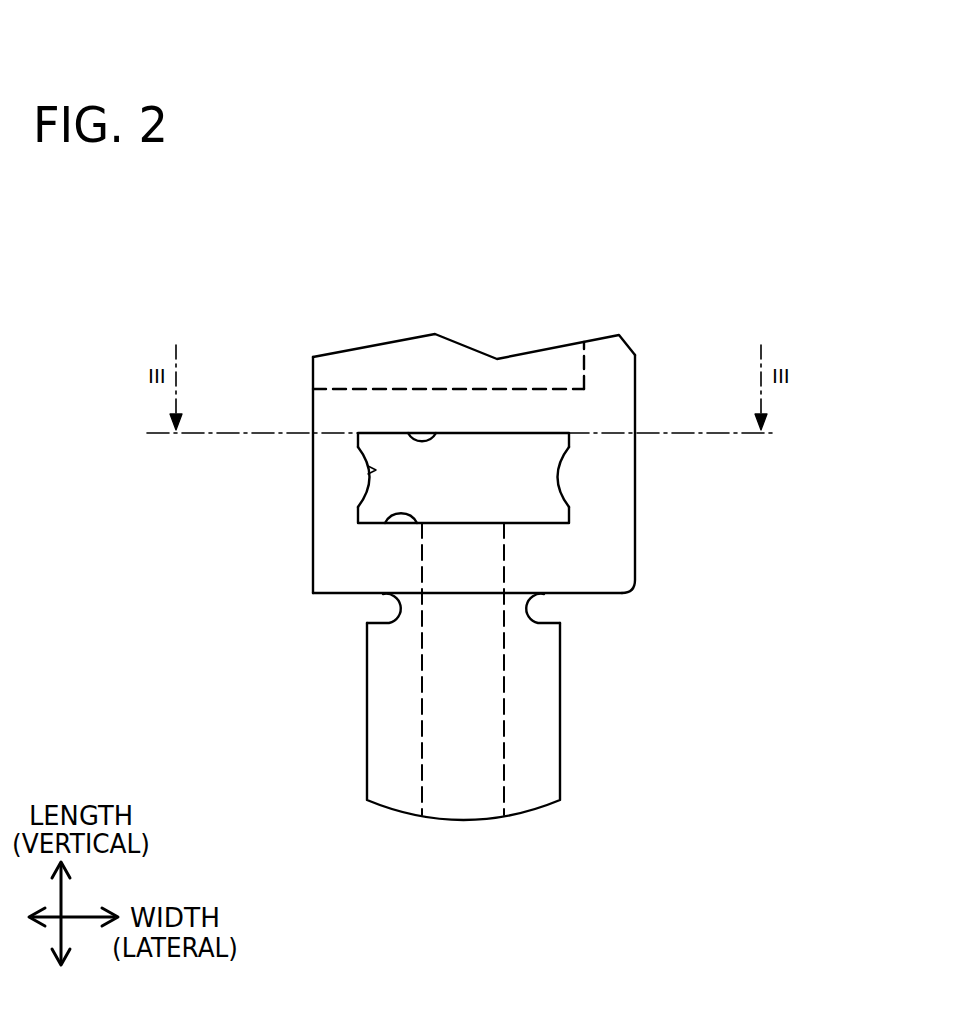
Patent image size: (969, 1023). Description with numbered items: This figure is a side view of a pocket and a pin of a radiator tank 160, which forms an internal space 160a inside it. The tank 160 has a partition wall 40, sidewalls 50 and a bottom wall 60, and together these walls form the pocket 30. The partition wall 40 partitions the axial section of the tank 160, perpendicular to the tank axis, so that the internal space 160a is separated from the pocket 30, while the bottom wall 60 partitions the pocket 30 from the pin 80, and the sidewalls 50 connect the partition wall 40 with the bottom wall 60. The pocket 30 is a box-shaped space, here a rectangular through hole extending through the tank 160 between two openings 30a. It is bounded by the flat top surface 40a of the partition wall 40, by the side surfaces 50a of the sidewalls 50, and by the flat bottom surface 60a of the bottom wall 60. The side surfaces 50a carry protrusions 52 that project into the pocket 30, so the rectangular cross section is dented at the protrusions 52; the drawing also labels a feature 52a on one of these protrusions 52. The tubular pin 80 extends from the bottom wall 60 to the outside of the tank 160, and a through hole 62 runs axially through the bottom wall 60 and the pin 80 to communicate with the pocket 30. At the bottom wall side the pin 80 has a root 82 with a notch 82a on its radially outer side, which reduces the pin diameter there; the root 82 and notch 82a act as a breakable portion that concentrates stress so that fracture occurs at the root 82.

The tank 160 is at (668, 256).
The internal space 160a is at (573, 367).
The partition wall 40 is at (500, 410).
The top surface 40a is at (420, 437).
The sidewalls 50 is at (313, 503).
The side surfaces 50a is at (358, 433).
The protrusions 52 is at (358, 496).
The apex of concave recess 52a is at (370, 470).
The pocket 30 is at (549, 467).
The openings 30a is at (554, 518).
The bottom wall 60 is at (528, 562).
The bottom surface 60a is at (397, 518).
The through hole 62 is at (504, 703).
The pin 80 is at (560, 775).
The root 82 is at (385, 611).
The notch 82a is at (533, 612).